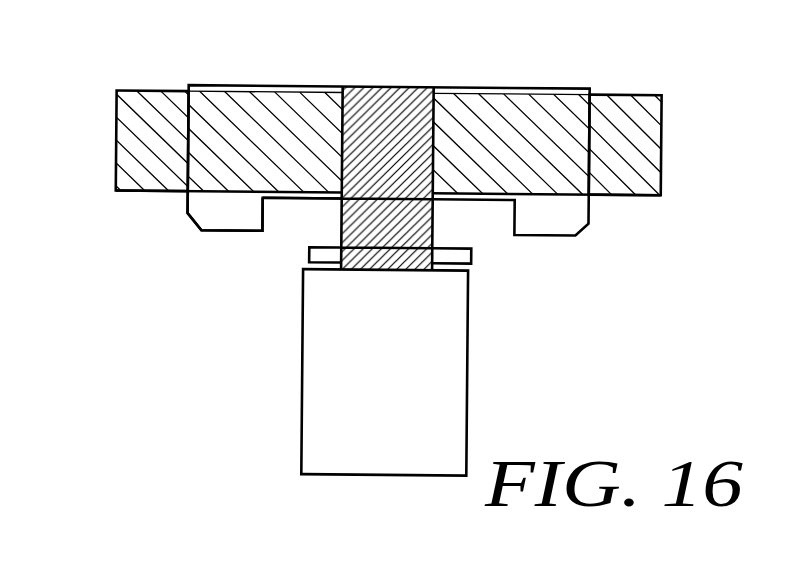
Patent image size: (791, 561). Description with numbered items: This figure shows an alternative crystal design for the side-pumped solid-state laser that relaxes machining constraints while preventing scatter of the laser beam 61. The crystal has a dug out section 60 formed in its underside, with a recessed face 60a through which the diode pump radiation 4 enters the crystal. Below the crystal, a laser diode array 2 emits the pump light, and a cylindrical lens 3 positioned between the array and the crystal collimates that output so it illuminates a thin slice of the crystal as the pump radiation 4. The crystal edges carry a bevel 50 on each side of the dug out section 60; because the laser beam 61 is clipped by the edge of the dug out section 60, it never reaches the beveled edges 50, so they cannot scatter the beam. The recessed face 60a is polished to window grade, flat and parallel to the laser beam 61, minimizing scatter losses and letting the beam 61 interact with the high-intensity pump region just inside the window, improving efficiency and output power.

The laser beam 61 is at (115, 102).
The dug out section 60 is at (458, 208).
The recessed face 60a is at (288, 203).
The bevel 50 is at (192, 224).
The diode pump radiation 4 is at (341, 222).
The cylindrical lens 3 is at (471, 255).
The laser diode array 2 is at (303, 350).